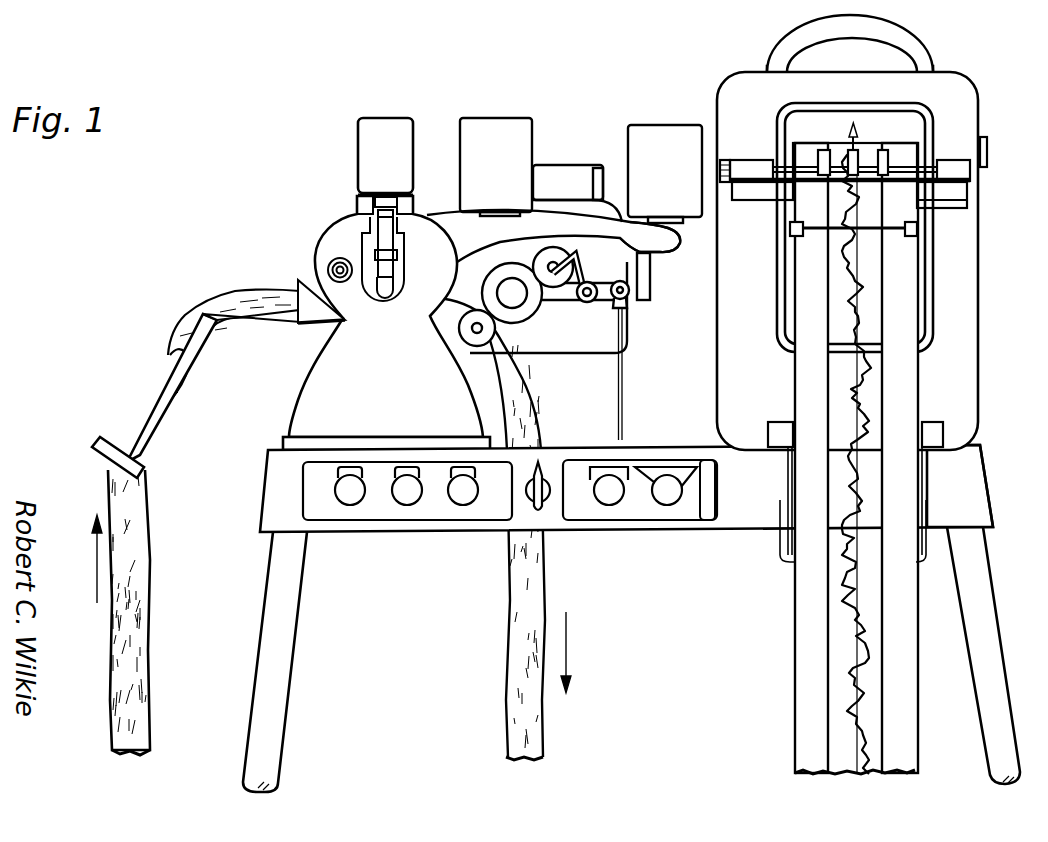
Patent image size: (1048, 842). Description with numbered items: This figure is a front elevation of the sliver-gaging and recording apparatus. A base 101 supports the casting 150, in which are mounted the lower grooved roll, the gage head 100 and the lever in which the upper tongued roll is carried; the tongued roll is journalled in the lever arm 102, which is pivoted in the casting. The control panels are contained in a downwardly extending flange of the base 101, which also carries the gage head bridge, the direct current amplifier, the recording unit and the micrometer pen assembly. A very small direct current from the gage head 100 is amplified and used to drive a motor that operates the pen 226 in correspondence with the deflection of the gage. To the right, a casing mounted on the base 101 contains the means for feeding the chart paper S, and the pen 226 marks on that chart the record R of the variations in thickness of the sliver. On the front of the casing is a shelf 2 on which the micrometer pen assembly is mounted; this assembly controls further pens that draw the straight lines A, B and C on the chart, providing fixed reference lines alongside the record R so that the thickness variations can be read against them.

The gage head 100 is at (382, 130).
The lever arm 102 is at (652, 246).
The casting 150 is at (386, 322).
The base 101 is at (968, 480).
The pen 226 is at (858, 132).
The shelf 2 is at (953, 204).
The straight line A is at (885, 608).
The straight line B is at (827, 602).
The straight line C is at (860, 693).
The record R is at (867, 356).
The chart paper S is at (880, 461).